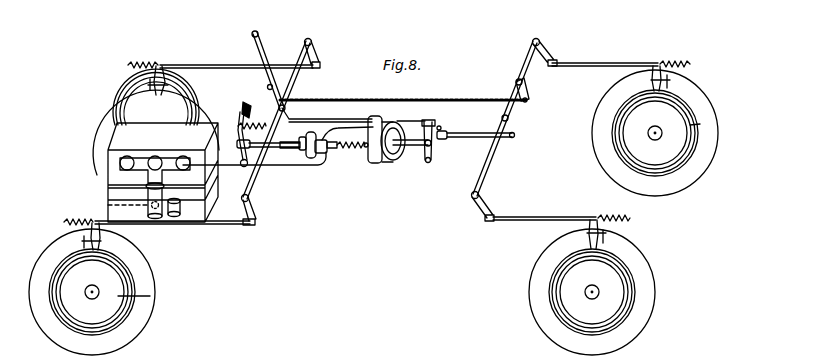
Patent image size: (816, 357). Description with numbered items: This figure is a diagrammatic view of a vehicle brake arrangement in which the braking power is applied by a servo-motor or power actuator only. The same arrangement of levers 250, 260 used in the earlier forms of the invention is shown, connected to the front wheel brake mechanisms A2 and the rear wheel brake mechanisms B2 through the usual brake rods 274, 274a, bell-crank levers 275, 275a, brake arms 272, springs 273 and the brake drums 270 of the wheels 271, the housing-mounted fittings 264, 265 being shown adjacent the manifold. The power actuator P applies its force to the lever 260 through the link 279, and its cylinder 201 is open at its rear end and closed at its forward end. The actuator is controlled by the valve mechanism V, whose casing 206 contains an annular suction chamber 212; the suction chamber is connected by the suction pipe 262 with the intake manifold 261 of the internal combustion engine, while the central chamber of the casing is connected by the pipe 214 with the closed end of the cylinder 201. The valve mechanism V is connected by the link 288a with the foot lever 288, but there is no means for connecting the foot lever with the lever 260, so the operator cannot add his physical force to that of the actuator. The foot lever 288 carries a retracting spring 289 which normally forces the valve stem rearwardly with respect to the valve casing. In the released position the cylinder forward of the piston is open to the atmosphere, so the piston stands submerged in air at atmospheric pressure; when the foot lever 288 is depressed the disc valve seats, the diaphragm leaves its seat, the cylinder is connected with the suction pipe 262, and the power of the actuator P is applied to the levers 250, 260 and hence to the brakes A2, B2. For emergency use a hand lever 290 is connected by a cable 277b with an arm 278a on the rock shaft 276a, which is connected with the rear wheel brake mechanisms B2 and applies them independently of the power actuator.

The cylinder 201 is at (380, 163).
The valve casing 206 is at (303, 347).
The annular suction chamber 212 is at (388, 350).
The pipe 214 is at (356, 126).
The lever 250 is at (426, 126).
The lever 260 is at (441, 131).
The intake manifold 261 is at (120, 165).
The suction pipe 262 is at (261, 165).
The cylinder 264 is at (108, 205).
The cylinder 265 is at (175, 216).
The brake drum 270 is at (134, 113).
The wheel 271 is at (612, 126).
The brake arm 272 is at (165, 72).
The spring 273 is at (366, 134).
The brake rod 274 is at (229, 65).
The brake rod 274a is at (628, 57).
The lever 275 is at (317, 46).
The lever 275a is at (547, 52).
The rock shaft 276a is at (489, 167).
The cable 277b is at (398, 100).
The arm 278a is at (528, 90).
The link 279 is at (410, 148).
The foot lever 288 is at (237, 112).
The link 288a is at (276, 166).
The retracting spring 289 is at (252, 123).
The emergency hand lever 290 is at (262, 42).
The front wheel brake mechanism A2 is at (122, 110).
The rear wheel brake mechanism B2 is at (700, 124).
The valve mechanism V is at (312, 132).
The power actuator P is at (355, 150).